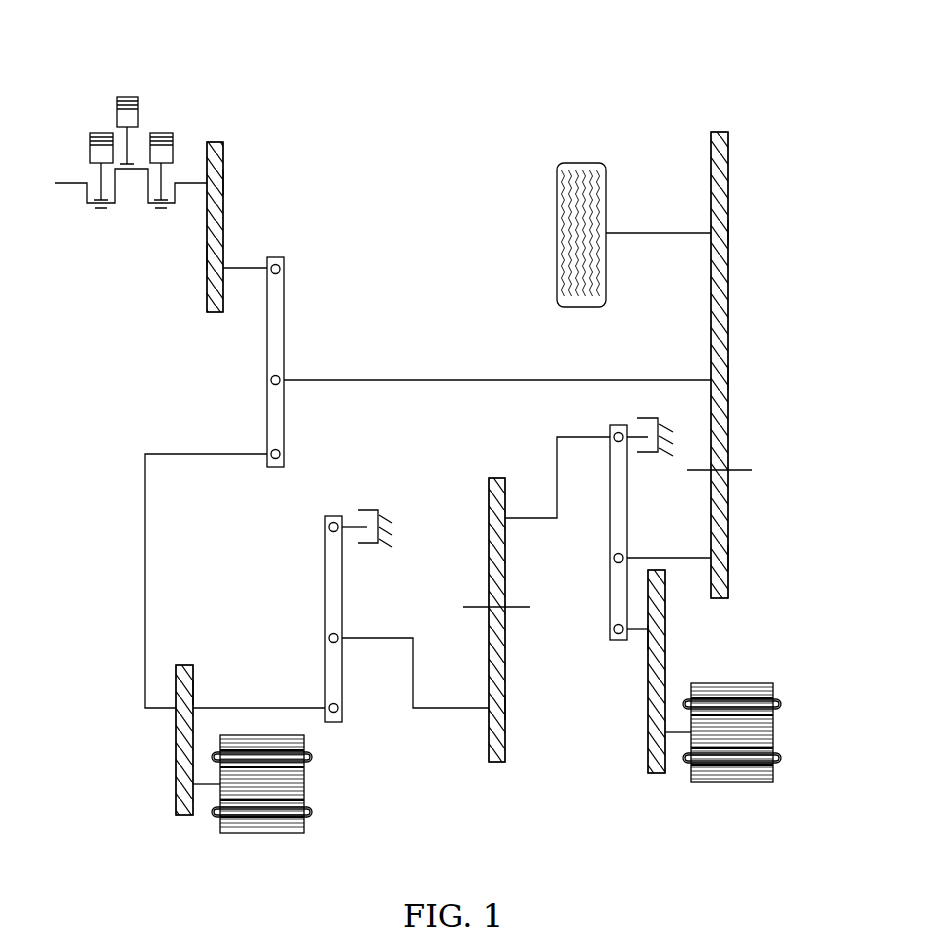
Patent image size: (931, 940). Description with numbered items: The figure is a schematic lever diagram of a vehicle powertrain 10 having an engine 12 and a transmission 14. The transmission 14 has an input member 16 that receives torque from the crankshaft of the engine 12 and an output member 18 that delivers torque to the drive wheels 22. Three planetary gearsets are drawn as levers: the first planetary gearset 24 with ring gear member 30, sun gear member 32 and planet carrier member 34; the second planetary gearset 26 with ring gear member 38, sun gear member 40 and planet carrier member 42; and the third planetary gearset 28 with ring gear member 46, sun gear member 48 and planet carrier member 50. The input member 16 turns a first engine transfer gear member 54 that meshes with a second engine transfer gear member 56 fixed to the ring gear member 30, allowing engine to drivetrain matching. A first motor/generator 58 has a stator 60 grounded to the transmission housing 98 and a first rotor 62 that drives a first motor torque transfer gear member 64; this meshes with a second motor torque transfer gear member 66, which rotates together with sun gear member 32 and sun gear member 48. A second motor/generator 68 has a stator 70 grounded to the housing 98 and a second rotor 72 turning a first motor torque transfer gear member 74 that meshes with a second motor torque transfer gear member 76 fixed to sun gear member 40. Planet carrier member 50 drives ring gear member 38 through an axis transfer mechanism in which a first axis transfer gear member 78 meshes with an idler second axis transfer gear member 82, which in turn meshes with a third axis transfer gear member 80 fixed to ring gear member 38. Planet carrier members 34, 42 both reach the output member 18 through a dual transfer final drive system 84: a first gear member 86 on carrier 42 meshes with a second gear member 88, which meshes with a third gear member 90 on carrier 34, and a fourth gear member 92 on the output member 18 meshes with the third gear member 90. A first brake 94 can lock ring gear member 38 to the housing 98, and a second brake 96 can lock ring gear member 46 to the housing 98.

The vehicle powertrain 10 is at (177, 70).
The engine 12 is at (89, 145).
The transmission 14 is at (578, 806).
The input member 16 is at (195, 182).
The output member 18 is at (636, 232).
The drive wheels 22 is at (580, 163).
The first planetary gearset 24 is at (285, 325).
The second planetary gearset 26 is at (628, 522).
The third planetary gearset 28 is at (325, 582).
The ring gear member 30 is at (283, 268).
The sun gear member 32 is at (283, 454).
The planet carrier member 34 is at (268, 380).
The ring gear member 38 is at (617, 433).
The sun gear member 40 is at (611, 628).
The planet carrier member 42 is at (611, 558).
The ring gear member 46 is at (325, 527).
The sun gear member 48 is at (343, 708).
The planet carrier member 50 is at (325, 638).
The first engine transfer gear member 54 is at (224, 182).
The second engine transfer gear member 56 is at (207, 258).
The first motor/generator 58 is at (257, 848).
The stator 60 is at (305, 742).
The first rotor 62 is at (205, 790).
The first motor torque transfer gear member 64 is at (176, 784).
The second motor torque transfer gear member 66 is at (194, 692).
The second motor/generator 68 is at (740, 791).
The stator 70 is at (733, 683).
The second rotor 72 is at (675, 729).
The first motor torque transfer gear member 74 is at (647, 731).
The second motor torque transfer gear member 76 is at (647, 639).
The first axis transfer gear member 78 is at (506, 708).
The third axis transfer gear member 80 is at (489, 517).
The second axis transfer gear member 82 is at (489, 597).
The dual transfer final drive system 84 is at (716, 106).
The first gear member 86 is at (729, 556).
The second gear member 88 is at (729, 465).
The third gear member 90 is at (729, 378).
The fourth gear member 92 is at (729, 232).
The first brake 94 is at (644, 401).
The second brake 96 is at (364, 557).
The transmission housing 98 is at (391, 530).